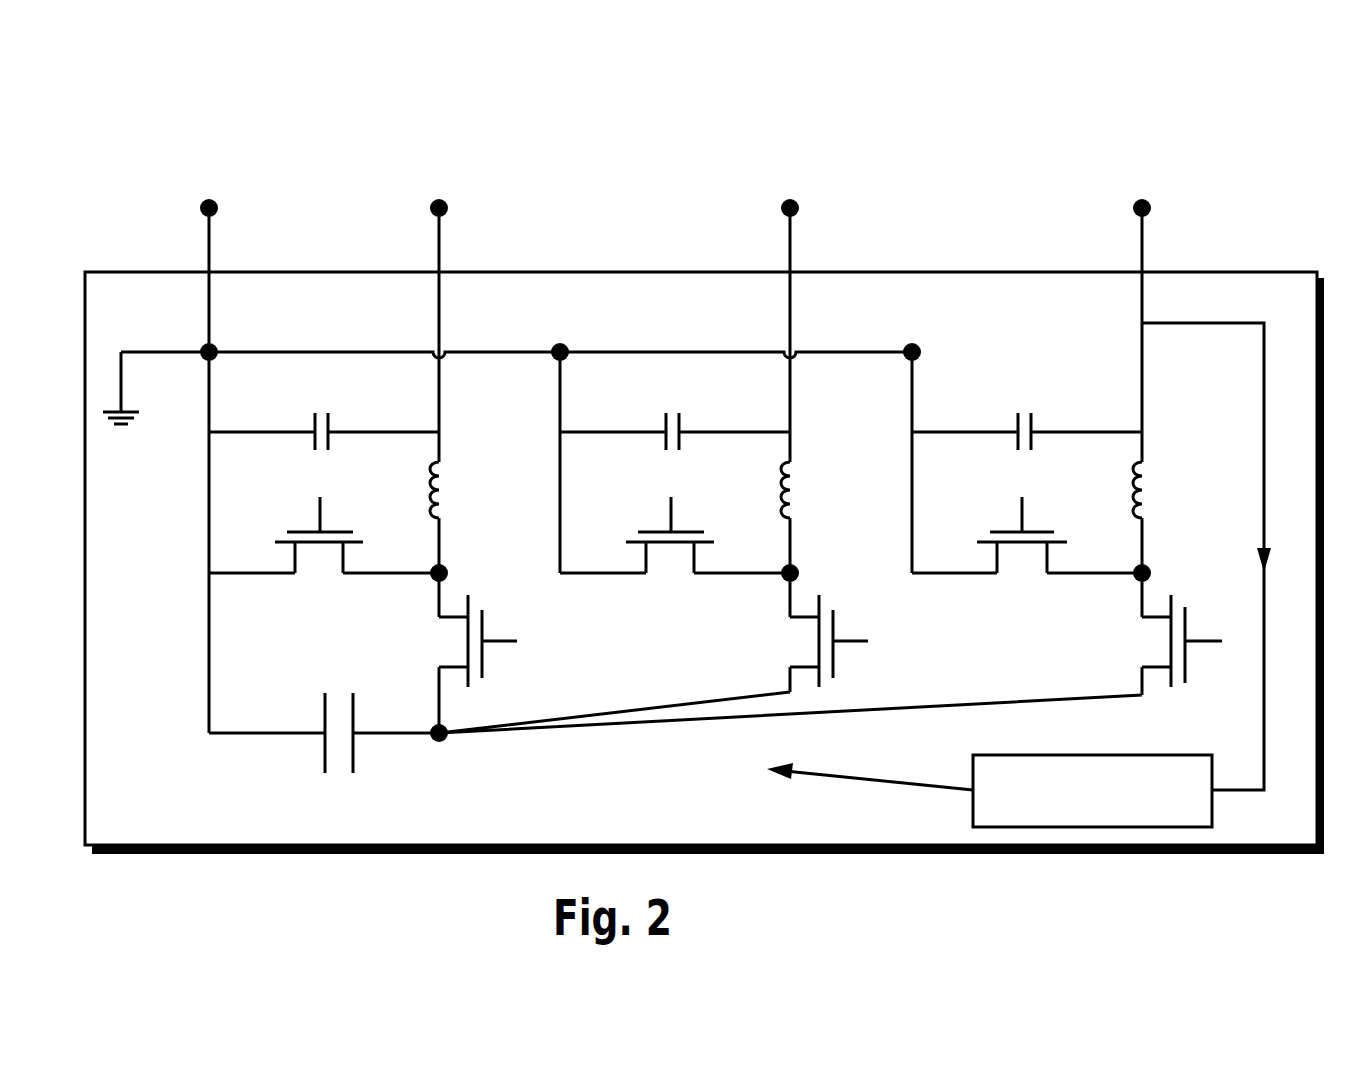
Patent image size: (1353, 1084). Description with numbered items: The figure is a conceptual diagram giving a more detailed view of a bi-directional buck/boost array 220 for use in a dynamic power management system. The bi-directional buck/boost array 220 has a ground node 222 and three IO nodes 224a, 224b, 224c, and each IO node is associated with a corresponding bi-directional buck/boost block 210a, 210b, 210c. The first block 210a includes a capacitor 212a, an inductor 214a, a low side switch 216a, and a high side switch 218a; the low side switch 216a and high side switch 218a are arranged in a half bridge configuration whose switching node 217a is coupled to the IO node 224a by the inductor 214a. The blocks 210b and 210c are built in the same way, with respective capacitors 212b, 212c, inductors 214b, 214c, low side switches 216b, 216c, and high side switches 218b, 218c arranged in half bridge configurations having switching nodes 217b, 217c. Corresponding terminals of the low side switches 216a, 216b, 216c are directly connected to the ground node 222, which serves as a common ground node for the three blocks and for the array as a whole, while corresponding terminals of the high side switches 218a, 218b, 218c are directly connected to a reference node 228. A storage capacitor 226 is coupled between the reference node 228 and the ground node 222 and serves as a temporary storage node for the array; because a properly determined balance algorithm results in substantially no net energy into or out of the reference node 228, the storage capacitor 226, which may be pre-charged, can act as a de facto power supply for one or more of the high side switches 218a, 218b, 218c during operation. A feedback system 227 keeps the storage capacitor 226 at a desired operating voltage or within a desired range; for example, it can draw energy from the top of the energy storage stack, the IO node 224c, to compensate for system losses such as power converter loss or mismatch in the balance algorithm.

The bi-directional buck/boost block 210a is at (205, 192).
The bi-directional buck/boost block 210b is at (550, 192).
The bi-directional buck/boost block 210c is at (907, 192).
The capacitor 212a is at (315, 437).
The capacitor 212b is at (666, 437).
The capacitor 212c is at (1018, 437).
The inductor 214a is at (448, 483).
The inductor 214b is at (799, 483).
The inductor 214c is at (1151, 483).
The low side switch 216a is at (312, 527).
The low side switch 216b is at (663, 527).
The low side switch 216c is at (1014, 527).
The switching node 217a is at (432, 585).
The switching node 217b is at (783, 585).
The switching node 217c is at (1134, 585).
The high side switch 218a is at (486, 657).
The high side switch 218b is at (837, 657).
The high side switch 218c is at (1188, 668).
The bi-directional buck/boost array 220 is at (1250, 136).
The ground node 222 is at (207, 352).
The IO node 224a is at (441, 210).
The IO node 224b is at (790, 210).
The IO node 224c is at (1144, 210).
The storage capacitor 226 is at (323, 765).
The feedback system 227 is at (1019, 575).
The reference node 228 is at (438, 745).